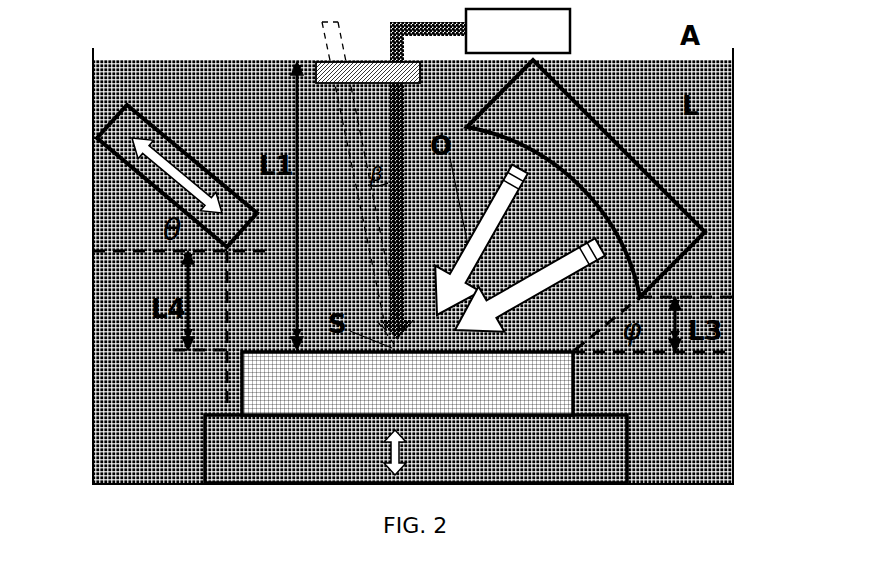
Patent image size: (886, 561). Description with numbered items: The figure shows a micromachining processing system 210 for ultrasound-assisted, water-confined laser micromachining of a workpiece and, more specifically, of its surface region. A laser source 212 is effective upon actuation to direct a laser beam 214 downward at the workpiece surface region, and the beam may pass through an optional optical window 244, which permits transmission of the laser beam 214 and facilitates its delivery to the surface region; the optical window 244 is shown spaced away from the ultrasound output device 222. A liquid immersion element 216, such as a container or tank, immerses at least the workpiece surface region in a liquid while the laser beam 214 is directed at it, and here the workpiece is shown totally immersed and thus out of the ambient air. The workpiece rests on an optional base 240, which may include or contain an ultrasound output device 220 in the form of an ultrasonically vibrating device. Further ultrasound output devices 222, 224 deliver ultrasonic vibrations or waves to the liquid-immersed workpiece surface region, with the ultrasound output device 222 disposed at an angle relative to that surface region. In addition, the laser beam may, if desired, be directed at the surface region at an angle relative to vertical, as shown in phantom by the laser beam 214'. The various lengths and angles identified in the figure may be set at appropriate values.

The micromachining processing system 210 is at (756, 264).
The laser source 212 is at (518, 31).
The laser beam 214 is at (403, 178).
The laser beam (angled, shown in phantom) 214' is at (326, 181).
The liquid immersion element 216 is at (84, 315).
The ultrasound output device 220 is at (382, 452).
The ultrasound output device 222 is at (570, 196).
The ultrasound output device 224 is at (137, 125).
The base 240 is at (416, 449).
The optical window 244 is at (430, 72).